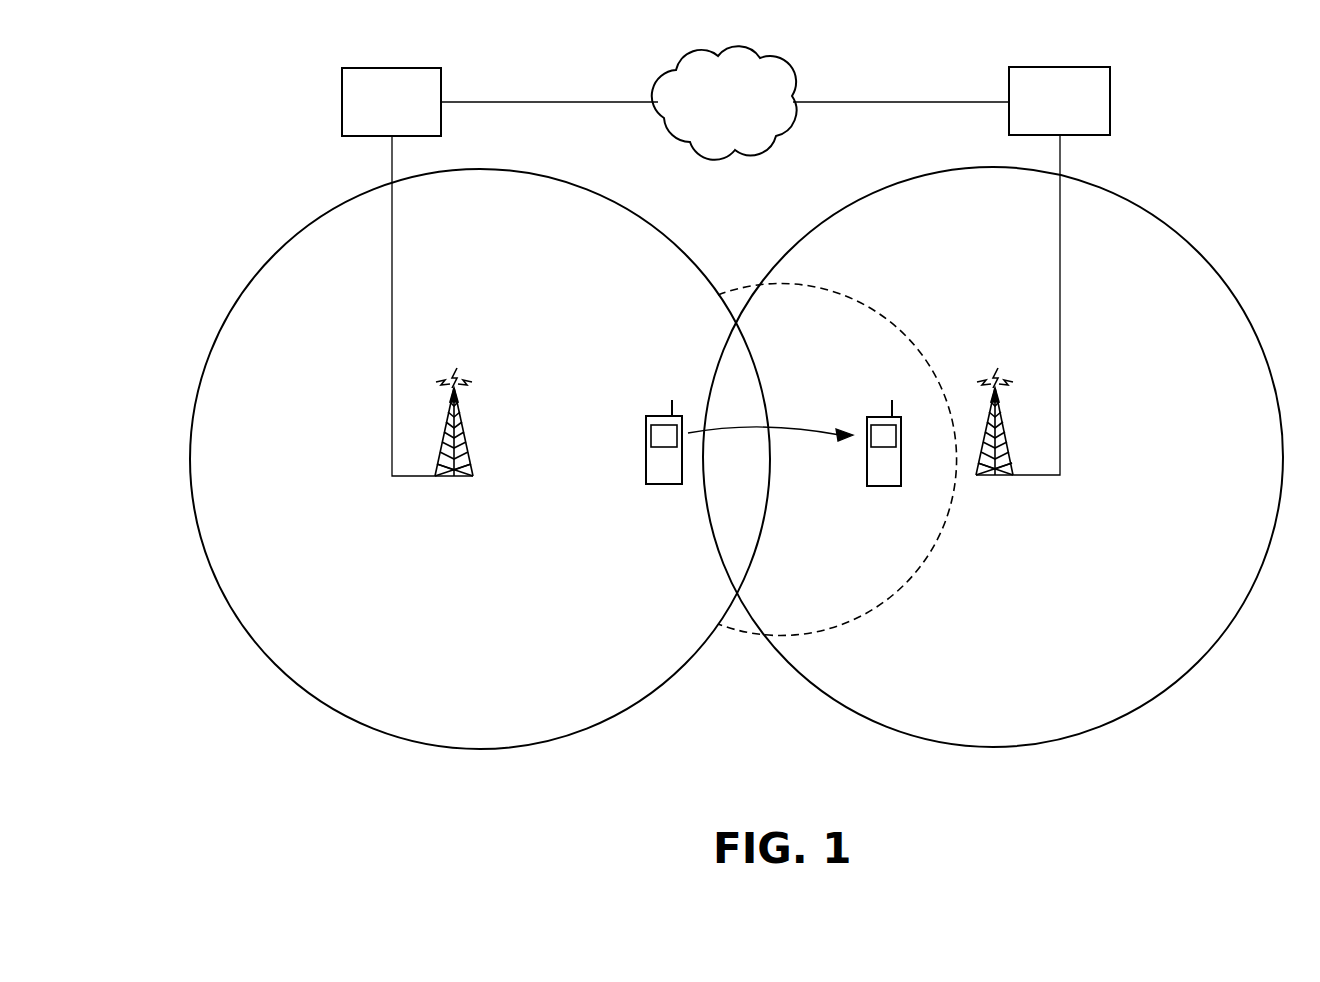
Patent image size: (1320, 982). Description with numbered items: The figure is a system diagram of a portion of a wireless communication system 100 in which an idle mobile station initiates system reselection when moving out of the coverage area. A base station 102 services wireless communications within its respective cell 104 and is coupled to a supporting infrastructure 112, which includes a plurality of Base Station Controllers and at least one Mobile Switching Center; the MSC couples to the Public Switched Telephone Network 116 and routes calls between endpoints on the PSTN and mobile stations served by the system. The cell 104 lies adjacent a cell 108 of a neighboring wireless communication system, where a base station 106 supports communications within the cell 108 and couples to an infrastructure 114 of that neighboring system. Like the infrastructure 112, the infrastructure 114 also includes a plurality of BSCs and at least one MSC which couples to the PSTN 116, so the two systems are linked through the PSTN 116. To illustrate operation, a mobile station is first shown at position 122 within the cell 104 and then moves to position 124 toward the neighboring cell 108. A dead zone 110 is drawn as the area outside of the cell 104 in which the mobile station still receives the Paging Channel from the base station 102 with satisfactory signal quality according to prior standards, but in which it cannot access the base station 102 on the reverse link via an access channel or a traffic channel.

The wireless communication system 100 is at (548, 798).
The base station 102 is at (455, 478).
The cell 104 is at (656, 226).
The base station 106 is at (996, 477).
The cell 108 is at (1100, 188).
The dead zone 110 is at (826, 311).
The supporting infrastructure 112 is at (363, 66).
The infrastructure 114 is at (1045, 66).
The Public Switched Telephone Network 116 is at (768, 64).
The position 122 is at (645, 467).
The position 124 is at (866, 475).